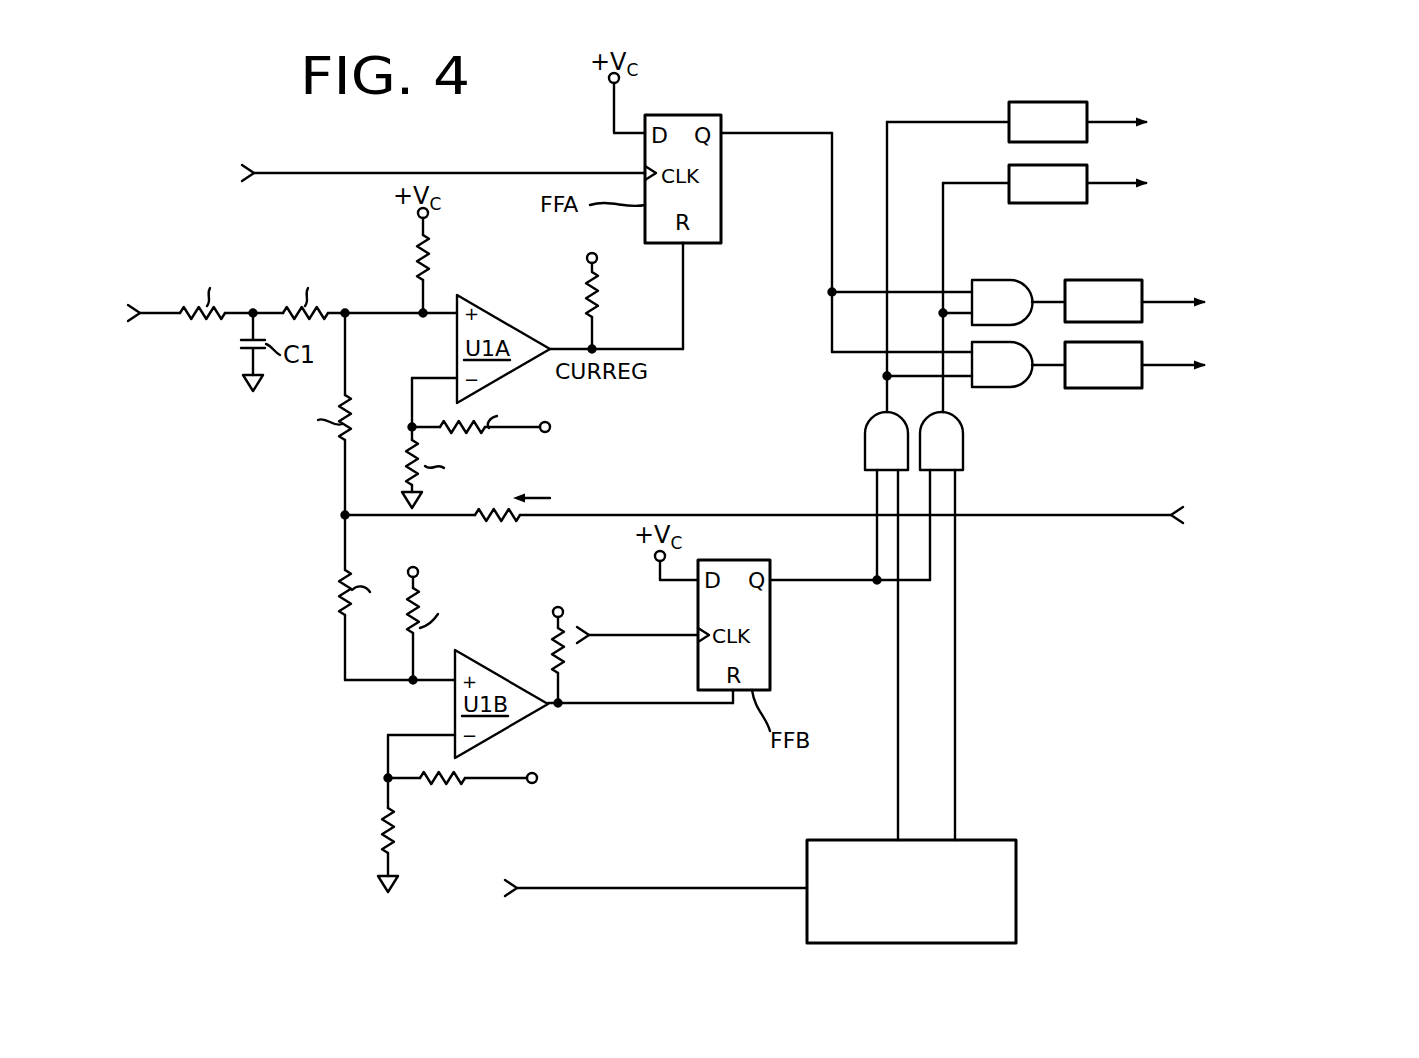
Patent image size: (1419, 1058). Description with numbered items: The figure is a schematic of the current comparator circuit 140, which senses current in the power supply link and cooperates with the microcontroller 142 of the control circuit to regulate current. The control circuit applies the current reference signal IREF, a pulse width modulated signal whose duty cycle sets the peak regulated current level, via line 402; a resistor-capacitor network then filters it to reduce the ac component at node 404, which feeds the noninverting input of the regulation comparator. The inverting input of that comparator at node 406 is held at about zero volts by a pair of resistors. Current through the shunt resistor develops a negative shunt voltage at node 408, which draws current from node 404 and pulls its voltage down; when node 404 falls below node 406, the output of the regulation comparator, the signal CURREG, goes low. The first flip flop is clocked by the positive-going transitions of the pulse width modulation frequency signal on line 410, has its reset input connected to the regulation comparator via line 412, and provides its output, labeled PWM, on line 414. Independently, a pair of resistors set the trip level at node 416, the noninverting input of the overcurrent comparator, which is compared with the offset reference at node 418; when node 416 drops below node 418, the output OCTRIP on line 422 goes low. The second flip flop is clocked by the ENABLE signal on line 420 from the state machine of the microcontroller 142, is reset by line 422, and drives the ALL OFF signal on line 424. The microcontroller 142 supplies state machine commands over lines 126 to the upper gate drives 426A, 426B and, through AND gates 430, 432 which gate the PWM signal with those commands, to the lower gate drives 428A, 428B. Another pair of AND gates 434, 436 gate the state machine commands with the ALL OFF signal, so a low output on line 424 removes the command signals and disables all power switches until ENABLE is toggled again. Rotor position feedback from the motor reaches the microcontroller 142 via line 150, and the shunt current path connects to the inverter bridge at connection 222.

The line 402 is at (157, 312).
The node 404 is at (345, 312).
The node 406 is at (411, 427).
The node 408 is at (345, 516).
The line 410 is at (423, 173).
The line 412 is at (684, 295).
The line 414 is at (756, 136).
The node 416 is at (410, 683).
The node 418 is at (386, 780).
The line 420 is at (628, 638).
The line 422 is at (680, 705).
The line 424 is at (826, 583).
The upper gate drive 426A is at (1028, 103).
The upper gate drive 426B is at (1010, 166).
The lower gate drive 428A is at (1098, 280).
The lower gate drive 428B is at (1117, 390).
The AND gate 430 is at (993, 280).
The AND gate 432 is at (1003, 388).
The AND gate 434 is at (965, 458).
The AND gate 436 is at (863, 440).
The current comparator circuit 140 is at (246, 648).
The microcontroller 142 is at (1016, 885).
The line 126 is at (898, 745).
The line 150 is at (543, 893).
The inverter bridge current line 222 is at (1095, 516).